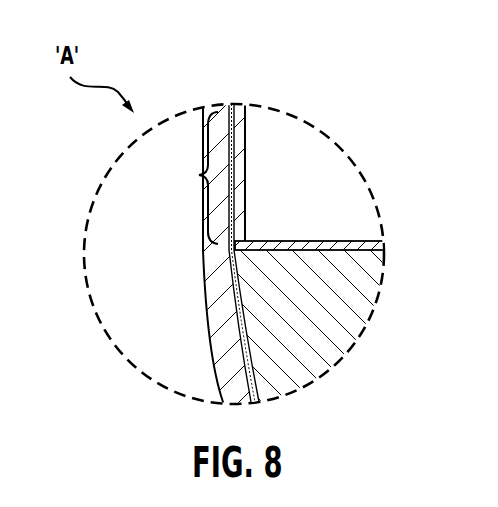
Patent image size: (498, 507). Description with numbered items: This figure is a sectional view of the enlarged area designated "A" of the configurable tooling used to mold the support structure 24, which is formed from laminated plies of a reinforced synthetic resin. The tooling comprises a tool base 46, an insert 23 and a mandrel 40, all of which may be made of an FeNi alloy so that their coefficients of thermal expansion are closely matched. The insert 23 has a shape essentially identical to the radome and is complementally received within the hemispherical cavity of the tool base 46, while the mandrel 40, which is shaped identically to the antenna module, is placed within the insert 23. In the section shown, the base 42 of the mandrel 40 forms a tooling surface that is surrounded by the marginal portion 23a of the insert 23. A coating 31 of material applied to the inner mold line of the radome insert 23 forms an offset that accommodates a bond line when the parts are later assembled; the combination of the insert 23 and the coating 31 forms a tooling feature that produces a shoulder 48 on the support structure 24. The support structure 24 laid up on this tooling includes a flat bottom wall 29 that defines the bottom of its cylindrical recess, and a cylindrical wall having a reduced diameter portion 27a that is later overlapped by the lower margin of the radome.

The insert 23 is at (238, 350).
The lower margin of the insert 23a is at (185, 178).
The support structure 24 is at (383, 241).
The reduced diameter portion 27a is at (245, 148).
The bottom wall 29 is at (283, 250).
The coating 31 is at (245, 225).
The mandrel 40 is at (337, 307).
The base of the mandrel 42 is at (366, 258).
The tool base 46 is at (213, 278).
The shoulder 48 is at (232, 106).